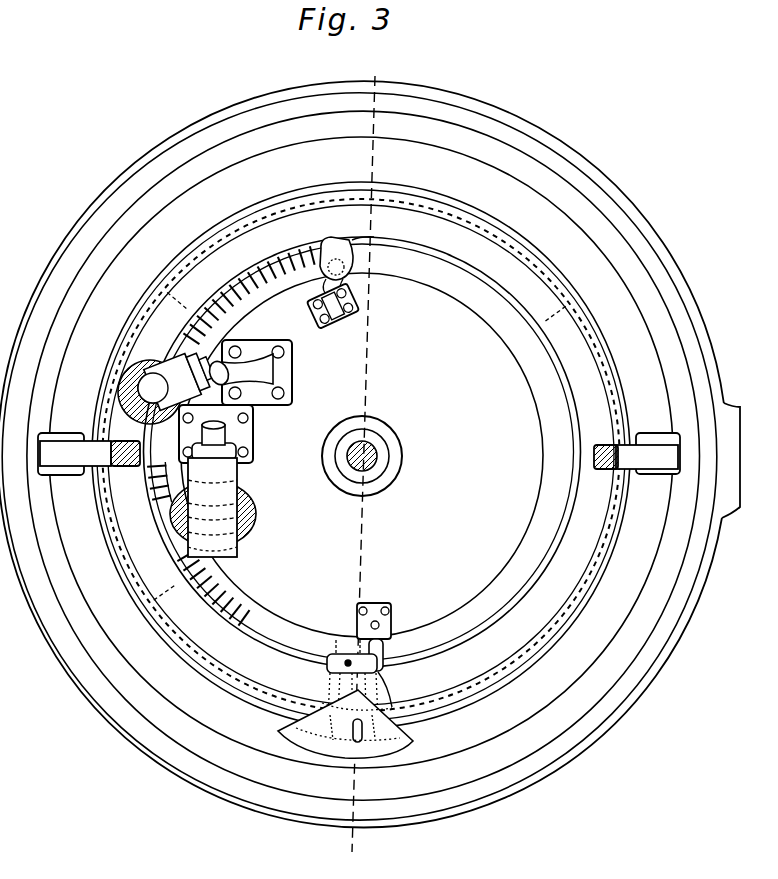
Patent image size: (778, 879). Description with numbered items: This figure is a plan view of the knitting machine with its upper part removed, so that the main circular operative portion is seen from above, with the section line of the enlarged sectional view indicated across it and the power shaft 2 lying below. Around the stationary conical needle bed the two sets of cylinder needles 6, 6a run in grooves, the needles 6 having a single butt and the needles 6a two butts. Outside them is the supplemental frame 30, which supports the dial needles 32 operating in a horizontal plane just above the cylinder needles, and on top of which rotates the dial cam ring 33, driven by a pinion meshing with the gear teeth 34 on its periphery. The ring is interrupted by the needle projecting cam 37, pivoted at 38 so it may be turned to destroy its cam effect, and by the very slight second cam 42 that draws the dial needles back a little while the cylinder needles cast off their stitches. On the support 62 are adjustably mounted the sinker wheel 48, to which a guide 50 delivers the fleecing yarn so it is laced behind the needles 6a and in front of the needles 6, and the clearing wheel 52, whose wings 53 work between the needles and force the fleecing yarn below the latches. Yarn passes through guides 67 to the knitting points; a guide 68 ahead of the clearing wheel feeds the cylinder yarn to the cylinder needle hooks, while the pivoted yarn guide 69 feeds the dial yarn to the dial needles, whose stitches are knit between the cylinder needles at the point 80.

The power shaft 2 is at (371, 239).
The cylinder needles 6 is at (209, 568).
The cylinder needles 6a is at (212, 549).
The supplemental frame 30 is at (651, 683).
The dial needles 32 is at (319, 238).
The dial cam ring 33 is at (361, 449).
The gear teeth 34 is at (365, 724).
The needle projecting cam 37 is at (381, 741).
The pivot 38 is at (392, 707).
The second cam 42 is at (374, 236).
The sinker wheel 48 is at (254, 530).
The guide 50 is at (221, 520).
The clearing wheel 52 is at (143, 373).
The wings 53 is at (128, 368).
The support 62 is at (362, 455).
The guides 67 is at (359, 454).
The guide 68 is at (350, 270).
The yarn guide 69 is at (340, 654).
The point 80 is at (393, 625).